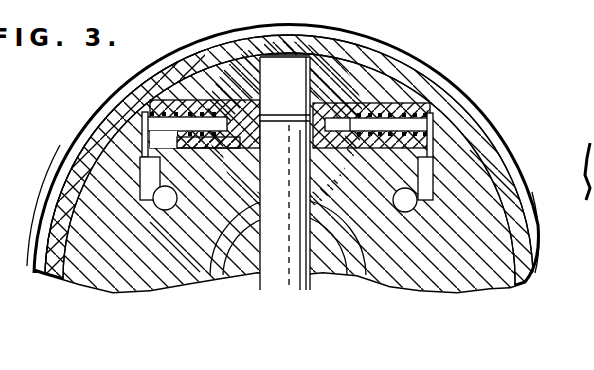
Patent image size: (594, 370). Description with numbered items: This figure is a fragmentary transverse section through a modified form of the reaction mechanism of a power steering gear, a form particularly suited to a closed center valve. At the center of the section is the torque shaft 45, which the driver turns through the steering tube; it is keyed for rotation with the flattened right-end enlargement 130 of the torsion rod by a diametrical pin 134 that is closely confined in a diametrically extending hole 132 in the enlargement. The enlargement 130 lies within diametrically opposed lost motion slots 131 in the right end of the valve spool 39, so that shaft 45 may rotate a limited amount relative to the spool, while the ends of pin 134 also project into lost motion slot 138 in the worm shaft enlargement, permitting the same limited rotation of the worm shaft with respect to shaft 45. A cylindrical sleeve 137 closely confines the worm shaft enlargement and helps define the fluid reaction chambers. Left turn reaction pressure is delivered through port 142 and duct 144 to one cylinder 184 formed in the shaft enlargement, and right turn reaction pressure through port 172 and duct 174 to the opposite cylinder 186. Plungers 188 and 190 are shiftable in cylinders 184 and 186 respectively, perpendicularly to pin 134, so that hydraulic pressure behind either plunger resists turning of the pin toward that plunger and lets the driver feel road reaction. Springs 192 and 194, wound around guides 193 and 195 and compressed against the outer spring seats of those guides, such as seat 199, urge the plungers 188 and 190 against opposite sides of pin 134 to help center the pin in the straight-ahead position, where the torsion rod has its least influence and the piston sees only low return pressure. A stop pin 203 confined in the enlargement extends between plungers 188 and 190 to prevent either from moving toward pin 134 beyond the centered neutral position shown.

The torque shaft 45 is at (437, 278).
The valve spool 39 is at (187, 262).
The enlargement 130 is at (322, 276).
The lost motion slots 131 is at (248, 272).
The diametrically extending hole 132 is at (300, 272).
The diametrical pin 134 is at (300, 149).
The cylindrical sleeve 137 is at (445, 136).
The lost motion slot 138 is at (285, 173).
The port 142 is at (150, 221).
The duct 144 is at (150, 168).
The port 172 is at (412, 214).
The duct 174 is at (433, 170).
The cylinder 184 is at (142, 122).
The cylinder 186 is at (487, 108).
The plunger 188 is at (238, 112).
The plunger 190 is at (342, 108).
The spring 192 is at (200, 78).
The guide 193 is at (172, 143).
The spring 194 is at (425, 68).
The guide 195 is at (147, 117).
The outer spring seat 199 is at (448, 100).
The stop pin 203 is at (293, 86).